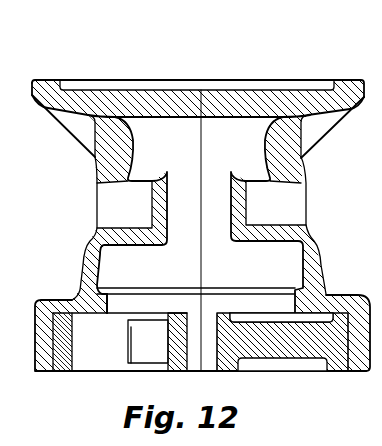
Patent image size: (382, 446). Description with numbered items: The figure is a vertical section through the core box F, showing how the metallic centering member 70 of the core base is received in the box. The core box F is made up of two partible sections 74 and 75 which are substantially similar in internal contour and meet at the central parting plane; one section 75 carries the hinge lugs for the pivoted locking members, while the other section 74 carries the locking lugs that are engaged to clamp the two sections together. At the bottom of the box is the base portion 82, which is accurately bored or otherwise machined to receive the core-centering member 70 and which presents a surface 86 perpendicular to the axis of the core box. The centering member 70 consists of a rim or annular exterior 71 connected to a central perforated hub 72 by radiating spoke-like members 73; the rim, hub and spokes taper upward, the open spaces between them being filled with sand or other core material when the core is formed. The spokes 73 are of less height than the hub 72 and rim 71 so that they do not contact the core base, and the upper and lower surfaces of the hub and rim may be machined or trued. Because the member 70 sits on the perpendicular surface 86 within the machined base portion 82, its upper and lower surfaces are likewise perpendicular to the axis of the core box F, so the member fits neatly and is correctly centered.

The core box F is at (198, 206).
The metallic centering member 70 is at (273, 383).
The rim or annular exterior 71 is at (62, 373).
The central perforated hub 72 is at (177, 368).
The radiating spoke-like members 73 is at (147, 351).
The core box section 74 is at (80, 98).
The core box section 75 is at (233, 98).
The base portion 82 is at (373, 355).
The surface 86 is at (93, 313).